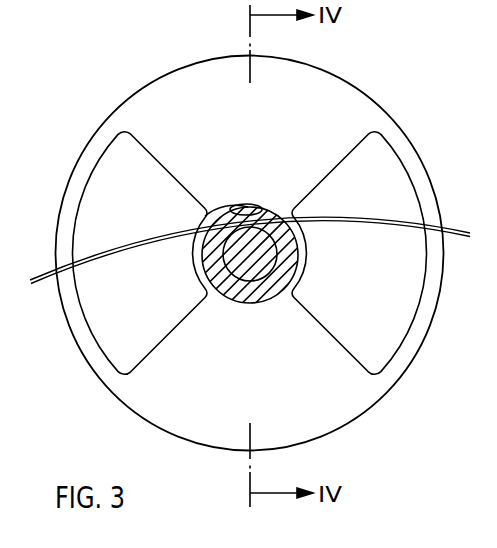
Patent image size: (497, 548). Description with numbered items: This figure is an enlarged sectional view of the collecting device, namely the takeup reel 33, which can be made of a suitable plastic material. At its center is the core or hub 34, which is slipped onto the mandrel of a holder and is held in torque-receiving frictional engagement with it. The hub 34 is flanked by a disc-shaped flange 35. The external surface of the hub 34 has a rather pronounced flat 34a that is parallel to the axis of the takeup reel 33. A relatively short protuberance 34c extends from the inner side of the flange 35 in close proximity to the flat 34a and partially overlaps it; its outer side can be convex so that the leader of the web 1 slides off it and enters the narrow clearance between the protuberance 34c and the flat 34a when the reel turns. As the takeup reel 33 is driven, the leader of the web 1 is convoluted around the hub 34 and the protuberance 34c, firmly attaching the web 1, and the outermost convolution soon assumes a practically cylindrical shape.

The web 1 is at (448, 227).
The takeup reel 33 is at (393, 82).
The hub 34 is at (292, 266).
The flat 34a is at (218, 220).
The protuberance 34c is at (248, 204).
The flange 35 is at (343, 408).